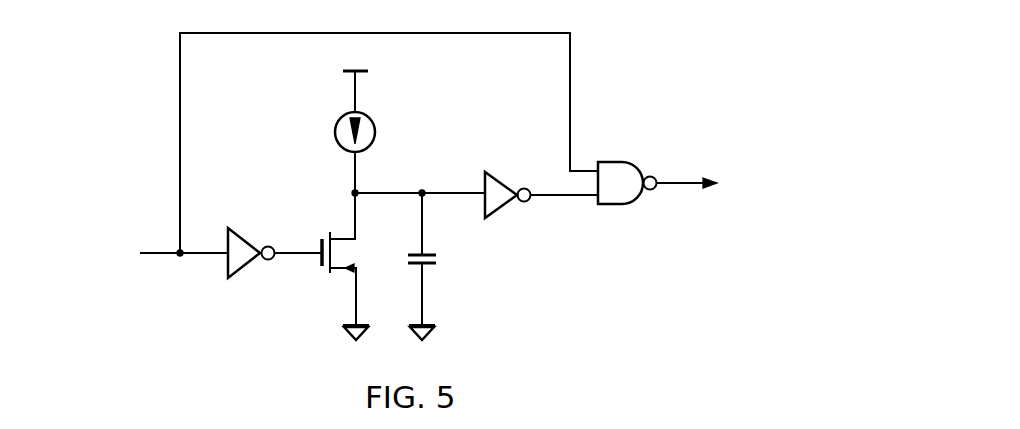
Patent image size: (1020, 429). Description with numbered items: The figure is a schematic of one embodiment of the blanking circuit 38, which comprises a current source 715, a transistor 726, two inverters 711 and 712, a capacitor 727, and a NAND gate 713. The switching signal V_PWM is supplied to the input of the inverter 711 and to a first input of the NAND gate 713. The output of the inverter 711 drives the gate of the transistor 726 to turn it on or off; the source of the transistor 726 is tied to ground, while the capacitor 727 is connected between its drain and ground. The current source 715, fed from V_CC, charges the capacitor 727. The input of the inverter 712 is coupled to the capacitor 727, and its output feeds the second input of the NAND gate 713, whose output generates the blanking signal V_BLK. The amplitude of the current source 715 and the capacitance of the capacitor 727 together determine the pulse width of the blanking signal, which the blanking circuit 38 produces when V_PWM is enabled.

The blanking circuit 38 is at (802, 61).
The inverter 711 is at (251, 243).
The inverter 712 is at (508, 181).
The NAND gate 713 is at (627, 170).
The current source 715 is at (375, 152).
The transistor 726 is at (356, 266).
The capacitor 727 is at (443, 266).